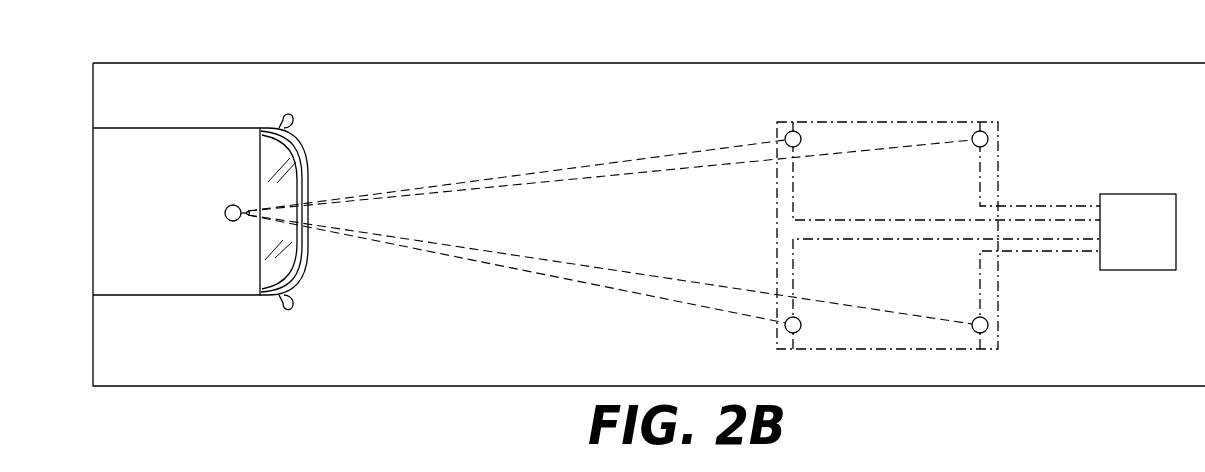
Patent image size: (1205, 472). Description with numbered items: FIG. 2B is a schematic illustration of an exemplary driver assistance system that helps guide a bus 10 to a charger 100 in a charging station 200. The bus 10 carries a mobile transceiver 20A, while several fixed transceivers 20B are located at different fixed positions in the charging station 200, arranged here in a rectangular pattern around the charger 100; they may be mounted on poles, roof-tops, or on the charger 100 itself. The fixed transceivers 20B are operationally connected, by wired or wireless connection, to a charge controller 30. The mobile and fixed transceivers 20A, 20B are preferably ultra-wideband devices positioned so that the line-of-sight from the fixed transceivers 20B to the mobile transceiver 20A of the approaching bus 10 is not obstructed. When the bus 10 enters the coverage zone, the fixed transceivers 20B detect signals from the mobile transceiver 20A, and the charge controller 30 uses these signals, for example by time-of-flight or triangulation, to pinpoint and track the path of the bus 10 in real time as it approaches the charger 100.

The charging station 200 is at (556, 45).
The bus 10 is at (122, 128).
The mobile transceiver 20A is at (235, 205).
The charger 100 is at (905, 113).
The fixed transceivers 20B is at (798, 133).
The charge controller 30 is at (1127, 244).